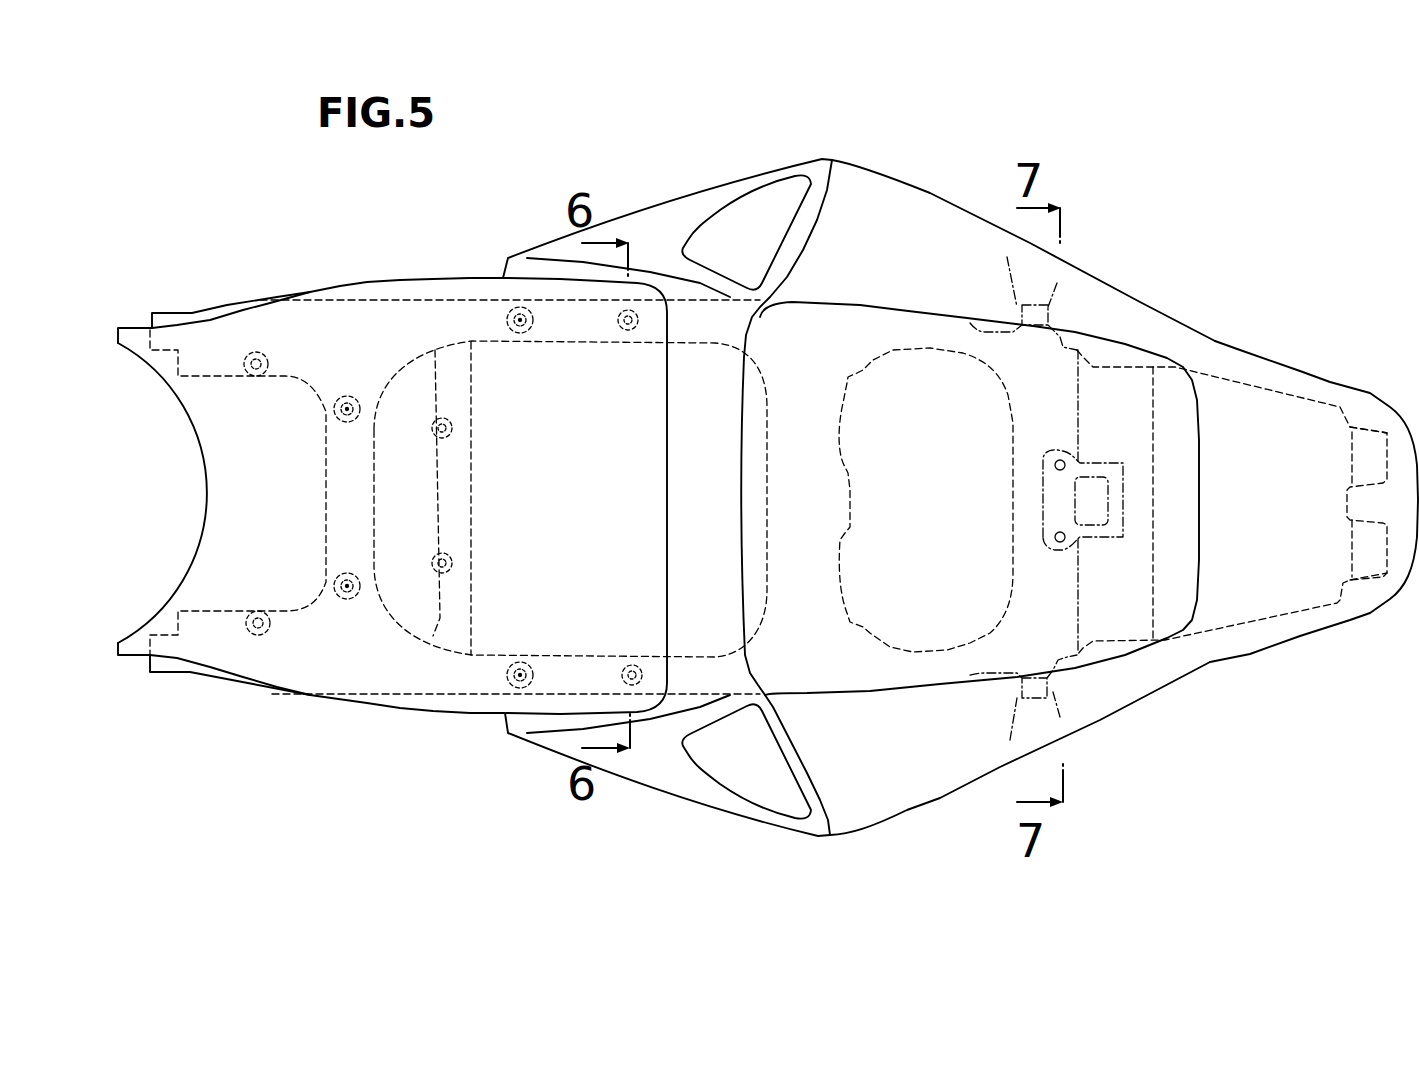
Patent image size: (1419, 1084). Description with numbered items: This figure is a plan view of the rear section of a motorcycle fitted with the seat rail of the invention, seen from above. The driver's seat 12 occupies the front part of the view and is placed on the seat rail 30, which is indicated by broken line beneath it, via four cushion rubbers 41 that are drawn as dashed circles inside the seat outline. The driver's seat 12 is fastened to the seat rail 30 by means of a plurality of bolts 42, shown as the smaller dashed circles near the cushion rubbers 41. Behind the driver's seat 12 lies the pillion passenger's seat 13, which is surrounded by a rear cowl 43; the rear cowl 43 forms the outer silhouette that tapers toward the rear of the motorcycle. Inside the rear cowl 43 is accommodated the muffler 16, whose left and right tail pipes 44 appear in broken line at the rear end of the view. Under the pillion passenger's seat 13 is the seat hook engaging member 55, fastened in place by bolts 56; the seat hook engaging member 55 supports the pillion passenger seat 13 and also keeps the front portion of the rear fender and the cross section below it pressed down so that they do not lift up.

The driver's seat 12 is at (232, 503).
The pillion passenger's seat 13 is at (860, 323).
The muffler 16 is at (1231, 624).
The seat rail 30 is at (187, 675).
The cushion rubbers 41 is at (343, 403).
The bolts 42 is at (630, 310).
The rear cowl 43 is at (917, 797).
The tail pipes 44 is at (1364, 427).
The seat hook engaging member 55 is at (1108, 463).
The bolts 56 is at (1060, 458).